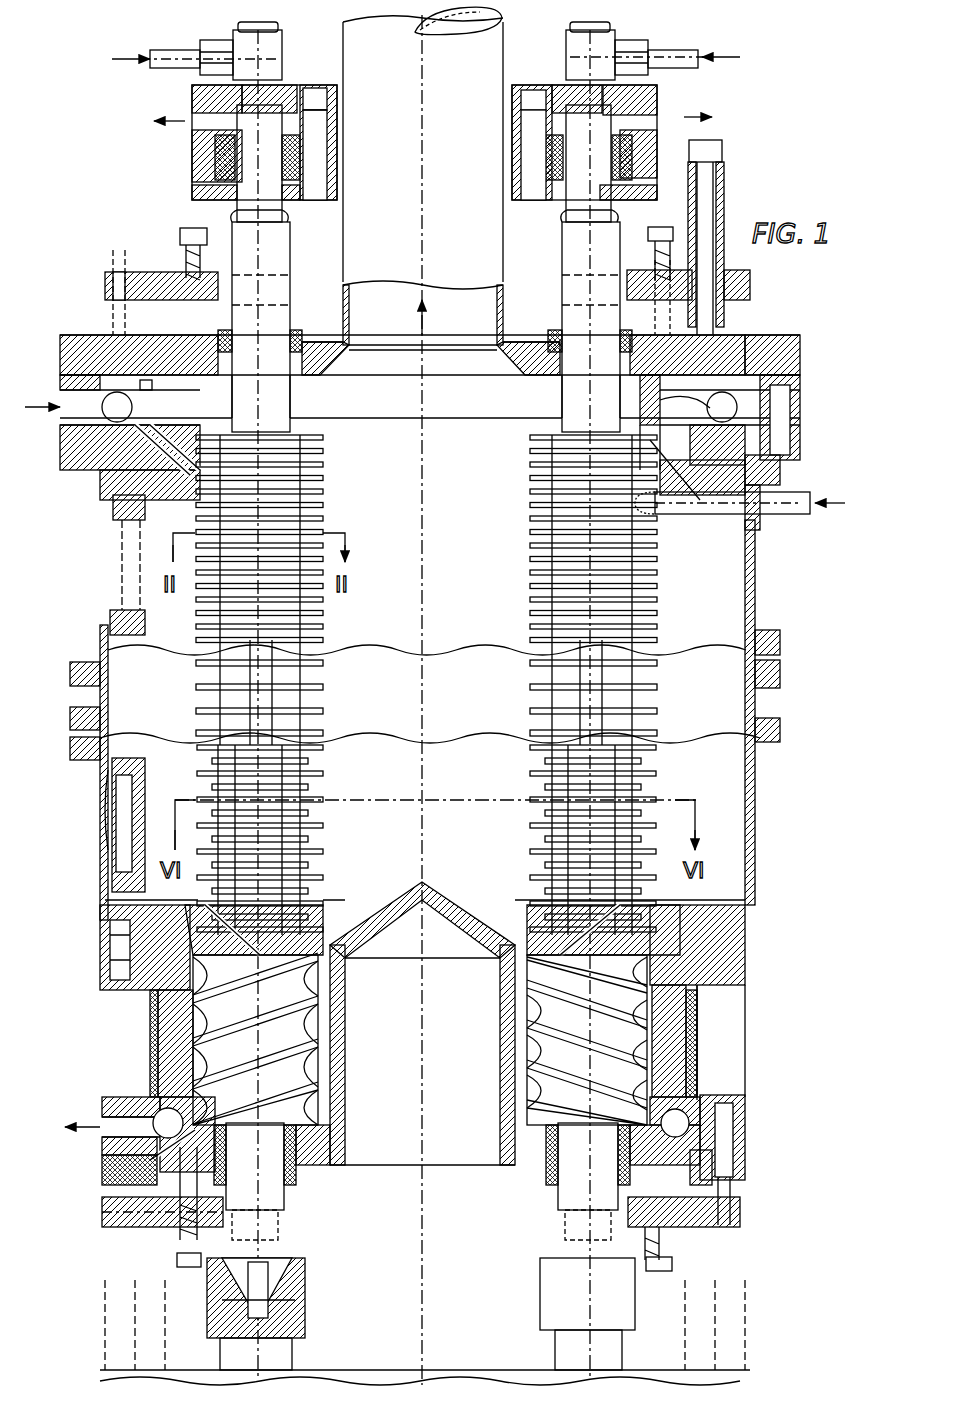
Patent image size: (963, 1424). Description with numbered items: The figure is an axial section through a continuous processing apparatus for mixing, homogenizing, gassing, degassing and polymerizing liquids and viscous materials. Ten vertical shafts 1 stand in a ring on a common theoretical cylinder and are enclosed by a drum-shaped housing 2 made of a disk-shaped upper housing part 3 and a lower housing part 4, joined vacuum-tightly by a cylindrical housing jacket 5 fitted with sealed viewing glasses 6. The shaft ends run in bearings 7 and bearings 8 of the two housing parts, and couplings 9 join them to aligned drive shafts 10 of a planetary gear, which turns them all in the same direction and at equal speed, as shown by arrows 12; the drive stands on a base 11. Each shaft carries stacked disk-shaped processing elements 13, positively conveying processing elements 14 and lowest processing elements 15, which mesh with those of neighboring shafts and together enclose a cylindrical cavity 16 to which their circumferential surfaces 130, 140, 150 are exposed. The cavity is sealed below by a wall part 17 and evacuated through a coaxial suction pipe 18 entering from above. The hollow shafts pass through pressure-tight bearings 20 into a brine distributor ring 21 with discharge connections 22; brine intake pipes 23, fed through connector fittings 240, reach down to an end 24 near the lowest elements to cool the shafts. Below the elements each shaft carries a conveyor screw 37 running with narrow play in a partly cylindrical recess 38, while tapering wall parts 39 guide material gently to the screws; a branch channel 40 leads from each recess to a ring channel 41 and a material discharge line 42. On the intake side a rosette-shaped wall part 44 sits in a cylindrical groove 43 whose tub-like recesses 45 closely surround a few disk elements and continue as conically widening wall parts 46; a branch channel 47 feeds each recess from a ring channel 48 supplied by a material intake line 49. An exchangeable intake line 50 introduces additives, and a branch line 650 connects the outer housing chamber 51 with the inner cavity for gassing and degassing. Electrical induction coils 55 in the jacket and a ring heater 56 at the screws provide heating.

The shafts 1 is at (286, 398).
The housing 2 is at (763, 822).
The upper housing part 3 is at (90, 305).
The lower housing part 4 is at (735, 970).
The housing jacket 5 is at (85, 695).
The viewing glasses 6 is at (120, 577).
The bearings 7 is at (304, 333).
The bearings 8 is at (300, 1140).
The couplings 9 is at (305, 1268).
The drive shafts 10 is at (289, 1346).
The base plate 11 is at (441, 1332).
The arrows 12 is at (271, 234).
The processing elements 13 is at (323, 480).
The processing elements 14 is at (323, 672).
The processing elements 15 is at (322, 766).
The cavity 16 is at (476, 602).
The wall part 17 is at (381, 955).
The suction pipe 18 is at (490, 52).
The pressure-tight bearings 20 is at (240, 165).
The brine distributor ring 21 is at (192, 100).
The brine discharge connection 22 is at (654, 112).
The brine intake pipes 23 is at (258, 112).
The end of brine intake pipe 24 is at (296, 906).
The conveyor screw 37 is at (185, 1020).
The partly cylindrical recess 38 is at (196, 1060).
The tapering wall parts 39 is at (120, 926).
The branch channel 40 is at (216, 1134).
The ring channel 41 is at (101, 1100).
The material discharge line 42 is at (100, 1138).
The cylindrical groove 43 is at (760, 454).
The rosette-shaped wall part 44 is at (730, 402).
The tub-like recesses 45 is at (643, 425).
The conically widening wall parts 46 is at (645, 460).
The branch channel 47 is at (170, 478).
The ring channel 48 is at (135, 408).
The material intake line 49 is at (75, 395).
The intake line for additives 50 is at (740, 531).
The outer housing chamber 51 is at (712, 607).
The electrical induction coils 55 is at (70, 670).
The ring heater 56 is at (696, 1071).
The circumferential surfaces 130 is at (658, 552).
The circumferential surfaces 140 is at (657, 687).
The circumferential surfaces 150 is at (646, 774).
The connector fittings 240 is at (280, 60).
The branch line 650 is at (700, 468).